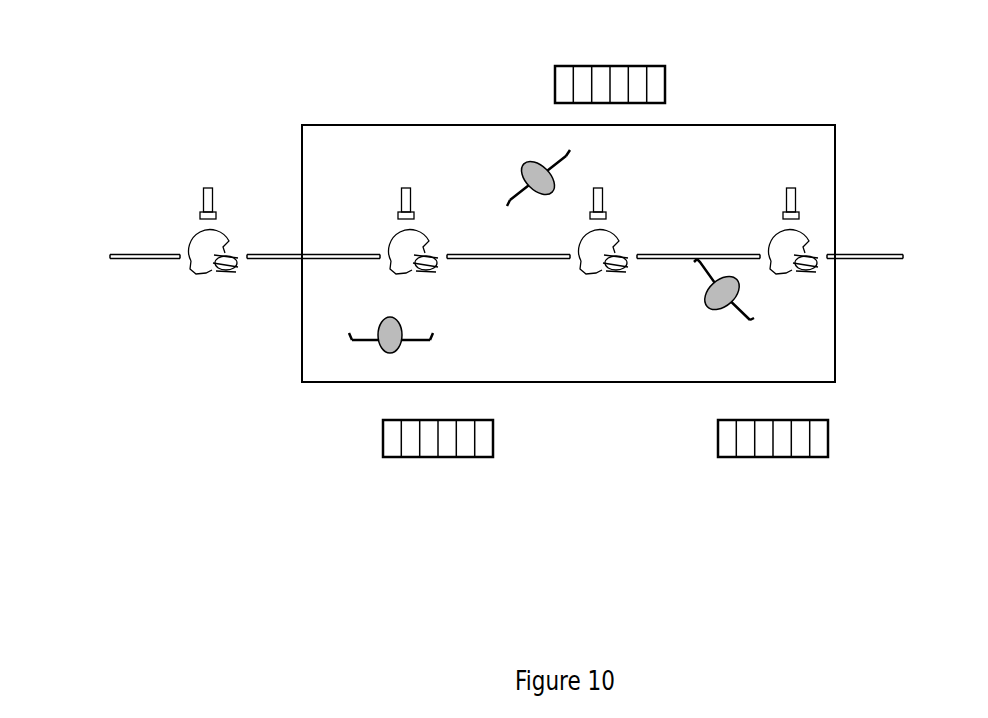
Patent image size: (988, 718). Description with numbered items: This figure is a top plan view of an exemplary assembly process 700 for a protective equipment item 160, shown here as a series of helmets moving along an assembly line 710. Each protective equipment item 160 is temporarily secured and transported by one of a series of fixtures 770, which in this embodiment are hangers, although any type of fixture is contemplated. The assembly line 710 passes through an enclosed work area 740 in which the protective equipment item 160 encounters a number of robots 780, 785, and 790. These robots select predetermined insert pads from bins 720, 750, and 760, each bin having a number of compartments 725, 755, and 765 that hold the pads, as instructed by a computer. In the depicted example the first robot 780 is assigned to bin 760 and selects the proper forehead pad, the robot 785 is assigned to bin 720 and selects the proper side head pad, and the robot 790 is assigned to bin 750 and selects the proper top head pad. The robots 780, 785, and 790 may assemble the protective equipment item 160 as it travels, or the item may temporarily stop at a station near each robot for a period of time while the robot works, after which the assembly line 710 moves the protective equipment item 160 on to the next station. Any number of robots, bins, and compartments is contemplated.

The helmet processing system 700 is at (125, 197).
The assembly line 710 is at (110, 257).
The protective equipment item 160 is at (193, 283).
The fixtures 770 is at (220, 193).
The processing chamber 740 is at (835, 357).
The bin 720 is at (617, 59).
The compartments 725 is at (657, 85).
The bin 760 is at (421, 484).
The compartments 765 is at (428, 447).
The bin 750 is at (756, 484).
The compartments 755 is at (747, 438).
The first robot 780 is at (385, 345).
The robot 785 is at (528, 163).
The robot 790 is at (715, 308).